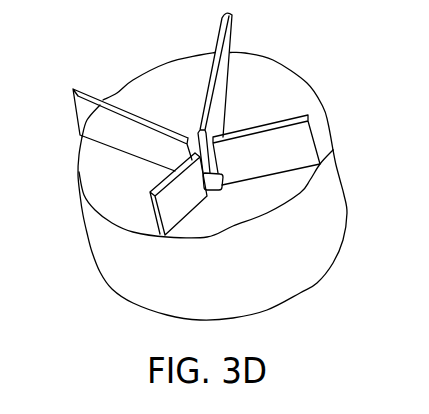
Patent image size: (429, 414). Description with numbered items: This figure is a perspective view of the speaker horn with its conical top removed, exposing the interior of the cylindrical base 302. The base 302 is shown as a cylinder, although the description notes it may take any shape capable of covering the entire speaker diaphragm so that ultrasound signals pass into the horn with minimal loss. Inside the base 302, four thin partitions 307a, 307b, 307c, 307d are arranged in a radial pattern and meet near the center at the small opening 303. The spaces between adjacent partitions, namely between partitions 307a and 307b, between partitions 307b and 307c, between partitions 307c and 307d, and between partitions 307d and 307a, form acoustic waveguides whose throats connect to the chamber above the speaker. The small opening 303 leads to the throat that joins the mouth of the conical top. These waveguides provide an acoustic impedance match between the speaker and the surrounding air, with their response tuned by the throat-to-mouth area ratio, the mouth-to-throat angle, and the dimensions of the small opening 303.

The cylindrical base 302 is at (335, 188).
The small opening 303 is at (217, 190).
The partition 307a is at (232, 43).
The partition 307b is at (306, 141).
The partition 307c is at (157, 208).
The partition 307d is at (88, 103).